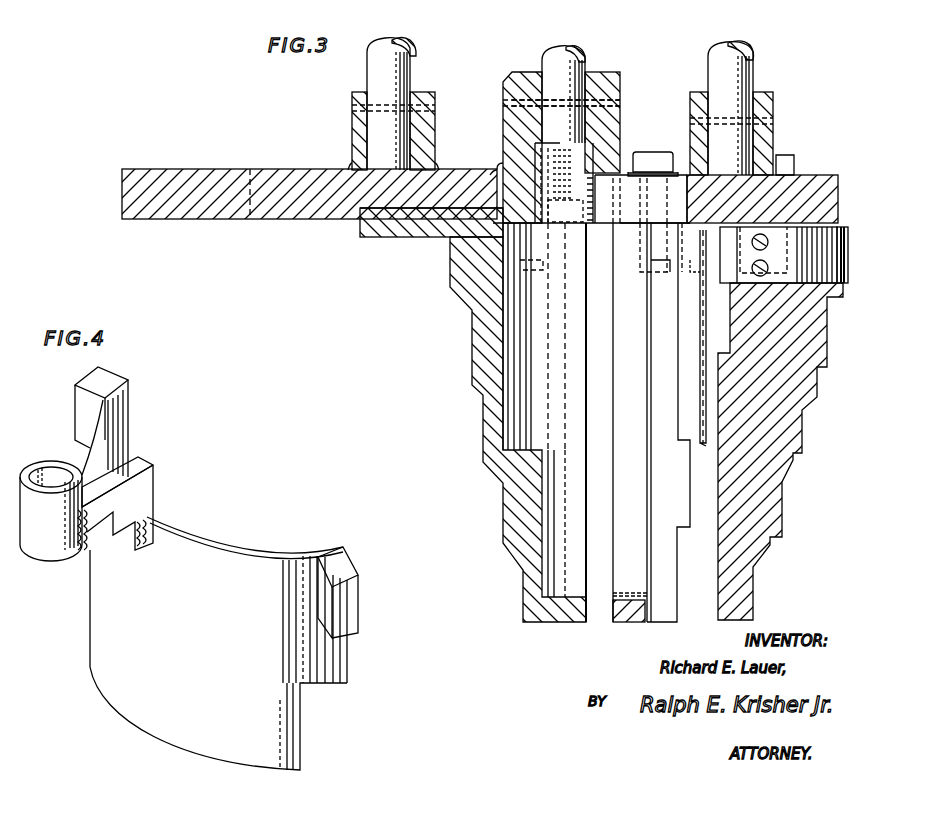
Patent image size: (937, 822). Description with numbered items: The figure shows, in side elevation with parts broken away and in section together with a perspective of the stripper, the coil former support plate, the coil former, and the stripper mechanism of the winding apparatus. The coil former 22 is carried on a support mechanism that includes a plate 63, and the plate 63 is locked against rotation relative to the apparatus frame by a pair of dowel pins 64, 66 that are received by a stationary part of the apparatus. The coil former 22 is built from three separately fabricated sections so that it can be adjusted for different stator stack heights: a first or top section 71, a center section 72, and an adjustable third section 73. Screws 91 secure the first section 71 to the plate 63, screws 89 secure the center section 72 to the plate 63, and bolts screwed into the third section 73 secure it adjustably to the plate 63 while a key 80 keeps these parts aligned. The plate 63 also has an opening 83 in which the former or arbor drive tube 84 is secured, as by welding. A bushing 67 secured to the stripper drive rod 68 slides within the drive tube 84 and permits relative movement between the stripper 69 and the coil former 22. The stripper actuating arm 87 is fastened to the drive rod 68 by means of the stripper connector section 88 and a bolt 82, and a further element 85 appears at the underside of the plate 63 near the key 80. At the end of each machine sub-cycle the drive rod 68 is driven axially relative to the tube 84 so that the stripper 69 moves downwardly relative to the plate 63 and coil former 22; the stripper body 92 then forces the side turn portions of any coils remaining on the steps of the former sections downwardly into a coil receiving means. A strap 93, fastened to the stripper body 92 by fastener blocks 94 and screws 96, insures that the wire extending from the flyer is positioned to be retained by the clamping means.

In FIG. 3, the coil former 22 is at (451, 310).
In FIG. 3, the plate 63 is at (185, 182).
In FIG. 3, the dowel pin 64 is at (411, 60).
In FIG. 3, the dowel pin 66 is at (755, 77).
In FIG. 3, the bushing 67 is at (617, 82).
In FIG. 3, the stripper drive rod 68 is at (566, 46).
In FIG. 3, the stripper 69 is at (716, 322).
In FIG. 4, the stripper 69 is at (206, 639).
In FIG. 3, the first section 71 is at (822, 345).
In FIG. 3, the center section 72 is at (625, 612).
In FIG. 3, the third section 73 is at (530, 518).
In FIG. 3, the key 80 is at (392, 239).
In FIG. 3, the bolt 82 is at (250, 190).
In FIG. 3, the opening 83 is at (497, 218).
In FIG. 3, the arbor drive tube 84 is at (620, 120).
In FIG. 3, the plate edge 85 is at (365, 222).
In FIG. 3, the stripper actuating arm 87 is at (601, 226).
In FIG. 4, the stripper actuating arm 87 is at (150, 467).
In FIG. 3, the stripper connector section 88 is at (535, 150).
In FIG. 4, the stripper connector section 88 is at (46, 463).
In FIG. 3, the screws 89 is at (650, 152).
In FIG. 3, the screws 91 is at (795, 158).
In FIG. 4, the stripper body 92 is at (201, 558).
In FIG. 3, the strap 93 is at (848, 270).
In FIG. 4, the fastener blocks 94 is at (105, 376).
In FIG. 3, the screws 96 is at (763, 268).